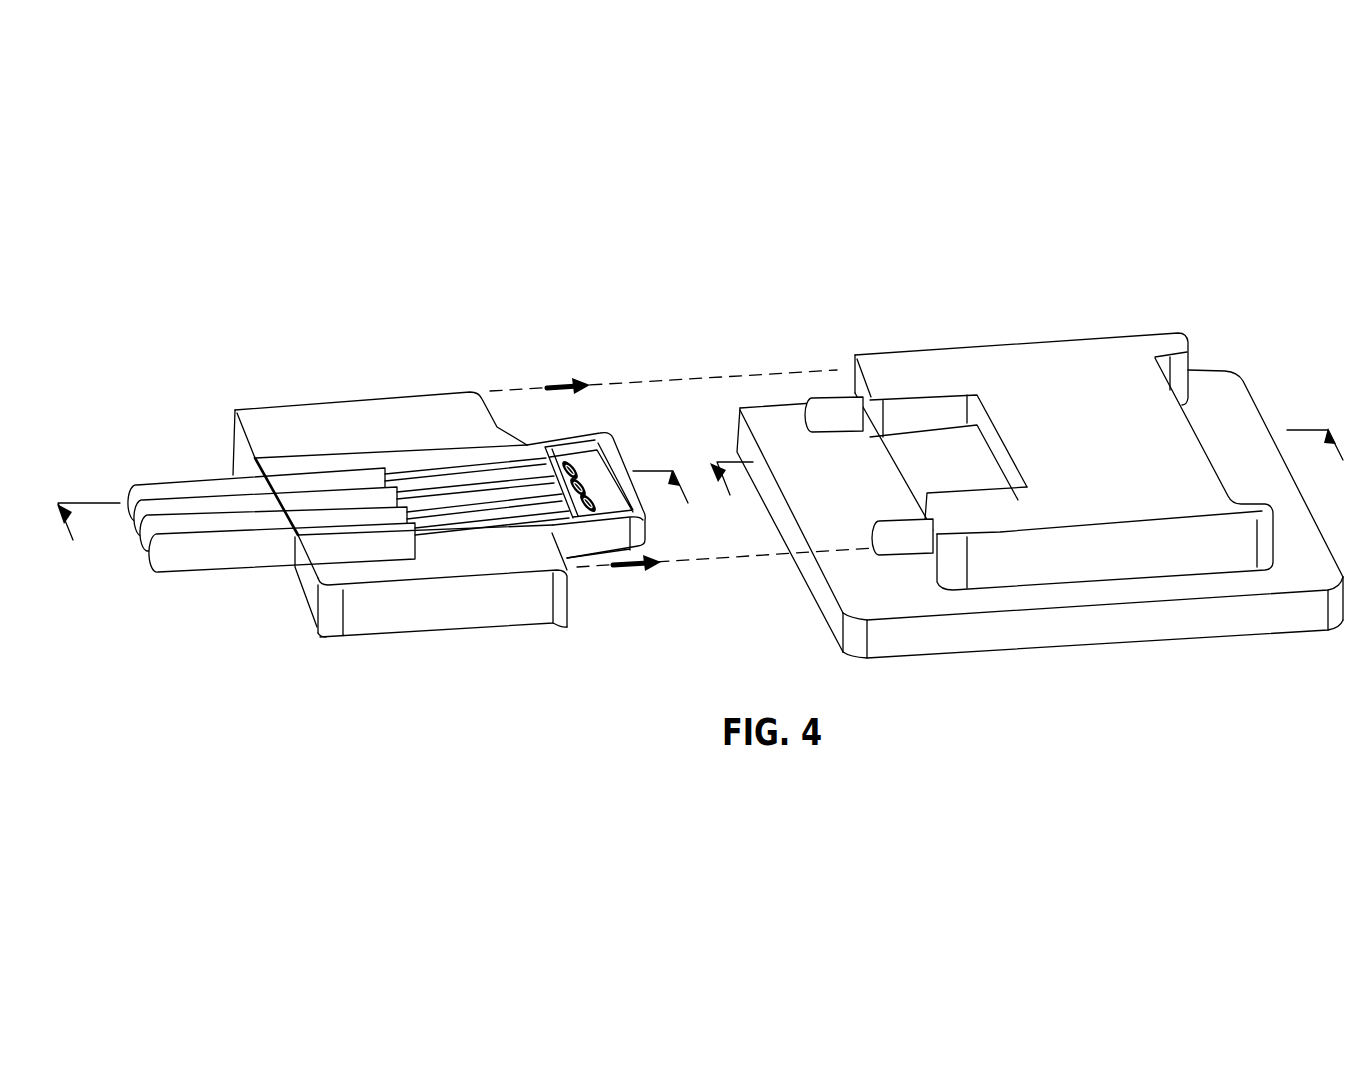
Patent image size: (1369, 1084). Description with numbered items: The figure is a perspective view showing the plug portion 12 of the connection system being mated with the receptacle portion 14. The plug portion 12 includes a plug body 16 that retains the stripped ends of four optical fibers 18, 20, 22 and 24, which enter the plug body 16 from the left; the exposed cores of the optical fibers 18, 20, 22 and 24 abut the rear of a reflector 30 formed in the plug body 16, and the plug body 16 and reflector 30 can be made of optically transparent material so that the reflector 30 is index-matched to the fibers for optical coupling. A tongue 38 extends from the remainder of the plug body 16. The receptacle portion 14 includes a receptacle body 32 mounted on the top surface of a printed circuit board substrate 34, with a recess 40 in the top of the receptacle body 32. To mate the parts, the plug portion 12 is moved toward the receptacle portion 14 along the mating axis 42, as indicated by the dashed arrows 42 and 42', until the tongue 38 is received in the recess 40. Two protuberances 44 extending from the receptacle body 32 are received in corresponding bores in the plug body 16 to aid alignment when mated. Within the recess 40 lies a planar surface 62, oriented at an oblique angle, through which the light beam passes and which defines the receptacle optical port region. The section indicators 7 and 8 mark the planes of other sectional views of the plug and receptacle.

The plug portion 12 is at (334, 314).
The receptacle portion 14 is at (834, 284).
The plug body 16 is at (390, 396).
The optical fiber 18 is at (348, 524).
The optical fiber 20 is at (172, 494).
The optical fiber 22 is at (184, 524).
The optical fiber 24 is at (242, 563).
The reflector 30 is at (560, 457).
The receptacle body 32 is at (1036, 343).
The printed circuit board substrate 34 is at (1073, 645).
The tongue 38 is at (617, 452).
The recess 40 is at (978, 474).
The mating axis 42 is at (663, 354).
The mating direction arrow 42' is at (741, 585).
The protuberance 44 is at (838, 398).
The planar surface 62 is at (919, 451).
The section line 7- 7 is at (378, 518).
The section line 8- 8 is at (1032, 476).